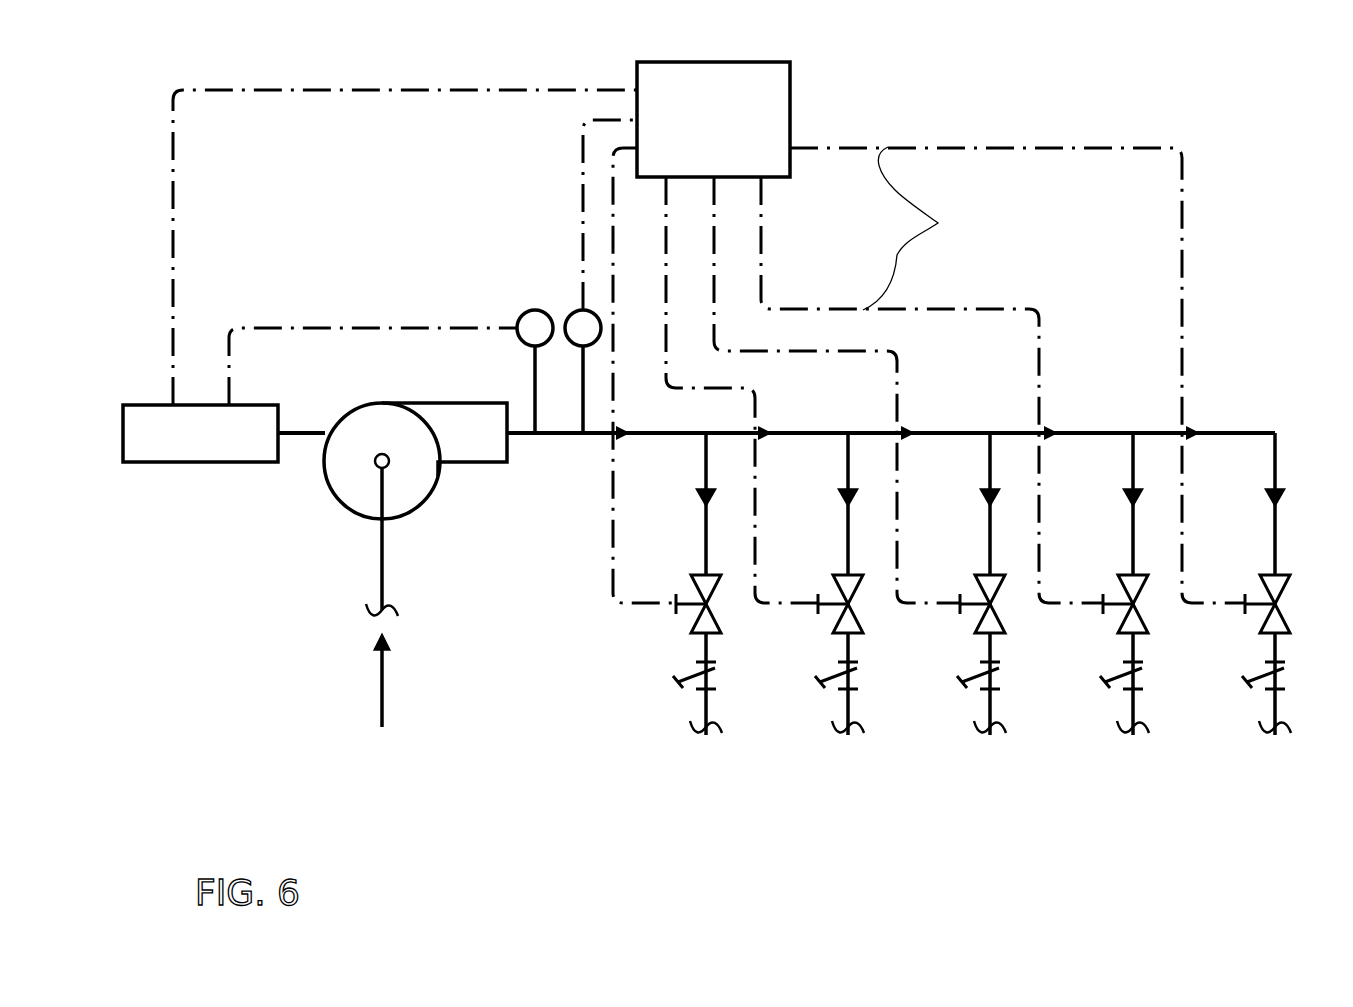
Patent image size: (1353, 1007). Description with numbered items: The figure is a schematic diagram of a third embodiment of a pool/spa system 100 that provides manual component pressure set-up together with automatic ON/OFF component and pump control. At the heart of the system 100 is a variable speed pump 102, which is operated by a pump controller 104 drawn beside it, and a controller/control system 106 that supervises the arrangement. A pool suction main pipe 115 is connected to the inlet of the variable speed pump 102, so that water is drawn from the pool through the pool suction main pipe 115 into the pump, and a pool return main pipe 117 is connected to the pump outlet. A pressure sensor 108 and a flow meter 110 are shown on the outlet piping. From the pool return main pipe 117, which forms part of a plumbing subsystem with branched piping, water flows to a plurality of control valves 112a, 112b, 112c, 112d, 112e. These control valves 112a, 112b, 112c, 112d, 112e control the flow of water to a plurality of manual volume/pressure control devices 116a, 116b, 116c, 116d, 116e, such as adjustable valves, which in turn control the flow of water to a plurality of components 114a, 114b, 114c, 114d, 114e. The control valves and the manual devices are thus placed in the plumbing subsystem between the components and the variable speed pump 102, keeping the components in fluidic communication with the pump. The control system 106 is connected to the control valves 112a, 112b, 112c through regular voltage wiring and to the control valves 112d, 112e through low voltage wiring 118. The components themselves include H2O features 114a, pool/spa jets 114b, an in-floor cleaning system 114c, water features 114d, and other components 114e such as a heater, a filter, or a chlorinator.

The system 100 is at (1222, 130).
The variable speed pump 102 is at (345, 478).
The pump controller 104 is at (162, 402).
The controller/control system 106 is at (760, 98).
The pressure sensor 108 is at (519, 318).
The flow meter 110 is at (574, 315).
The control valve 112a is at (701, 625).
The control valve 112b is at (843, 625).
The control valve 112c is at (985, 625).
The control valve 112d is at (1128, 625).
The control valve 112e is at (1270, 625).
The H2O features 114a is at (681, 780).
The pool/spa jets 114b is at (822, 780).
The in-floor cleaning system 114c is at (964, 780).
The water features 114d is at (1106, 780).
The other components 114e is at (1248, 780).
The pool suction main pipe 115 is at (392, 556).
The manual volume/pressure control device 116a is at (678, 683).
The manual volume/pressure control device 116b is at (820, 683).
The manual volume/pressure control device 116c is at (962, 683).
The manual volume/pressure control device 116d is at (1105, 683).
The manual volume/pressure control device 116e is at (1247, 683).
The pool return main pipe 117 is at (600, 440).
The low voltage wiring 118 is at (923, 228).